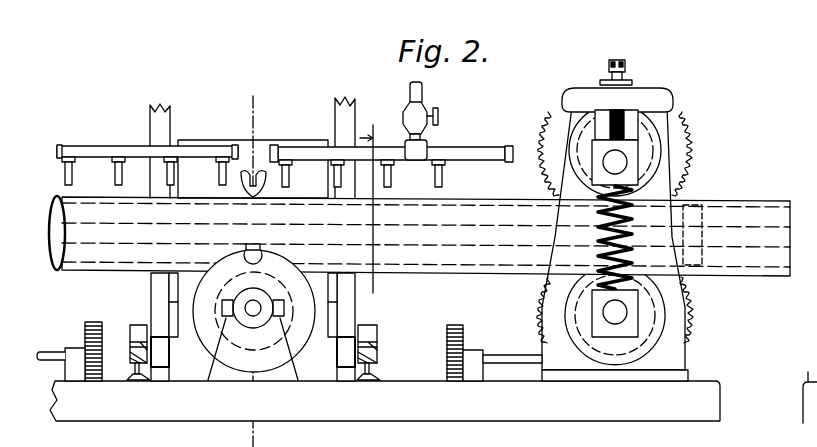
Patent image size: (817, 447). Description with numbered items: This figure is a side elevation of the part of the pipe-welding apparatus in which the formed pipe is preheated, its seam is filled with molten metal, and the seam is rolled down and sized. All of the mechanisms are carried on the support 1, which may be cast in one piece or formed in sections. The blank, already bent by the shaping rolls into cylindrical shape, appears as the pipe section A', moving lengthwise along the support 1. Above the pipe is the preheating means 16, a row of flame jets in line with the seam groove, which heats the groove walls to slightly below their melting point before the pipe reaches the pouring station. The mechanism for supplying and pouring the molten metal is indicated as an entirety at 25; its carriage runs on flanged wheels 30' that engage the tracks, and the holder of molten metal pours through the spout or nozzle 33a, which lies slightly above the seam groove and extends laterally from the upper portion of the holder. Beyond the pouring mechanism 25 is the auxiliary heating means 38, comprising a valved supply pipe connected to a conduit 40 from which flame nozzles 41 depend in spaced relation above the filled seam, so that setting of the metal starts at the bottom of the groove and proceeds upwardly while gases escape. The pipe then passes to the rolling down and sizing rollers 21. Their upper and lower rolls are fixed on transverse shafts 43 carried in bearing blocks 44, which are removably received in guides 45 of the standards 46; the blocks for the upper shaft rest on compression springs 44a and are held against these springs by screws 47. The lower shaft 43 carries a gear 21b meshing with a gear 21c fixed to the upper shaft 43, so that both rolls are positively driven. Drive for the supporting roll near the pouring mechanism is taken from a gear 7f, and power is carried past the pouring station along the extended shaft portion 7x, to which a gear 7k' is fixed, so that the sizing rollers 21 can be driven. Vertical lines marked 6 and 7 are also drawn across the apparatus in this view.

The support 1 is at (537, 418).
The section line 6 is at (253, 262).
The section line 7 is at (369, 211).
The preheating means 16 is at (147, 151).
The mechanism for supplying and pouring molten metal 25 is at (391, 150).
The auxiliary heating means 38 is at (433, 121).
The conduit 40 is at (483, 149).
The flame jets or nozzles 41 is at (440, 177).
The pouring spout or nozzle 33a is at (266, 190).
The screws 47 is at (615, 105).
The guides 45 is at (668, 110).
The rolling down and sizing rollers 21 is at (630, 244).
The gear 21c is at (656, 160).
The gear 21b is at (694, 298).
The compression springs 44a is at (630, 185).
The transverse shafts 43 is at (612, 315).
The standards 46 is at (668, 254).
The bearing blocks 44 is at (816, 326).
The gear 7f is at (97, 320).
The flanged wheels 30' is at (260, 343).
The gear 7k' is at (465, 336).
The extended shaft portion 7x is at (507, 355).
The pipe section A' is at (419, 240).